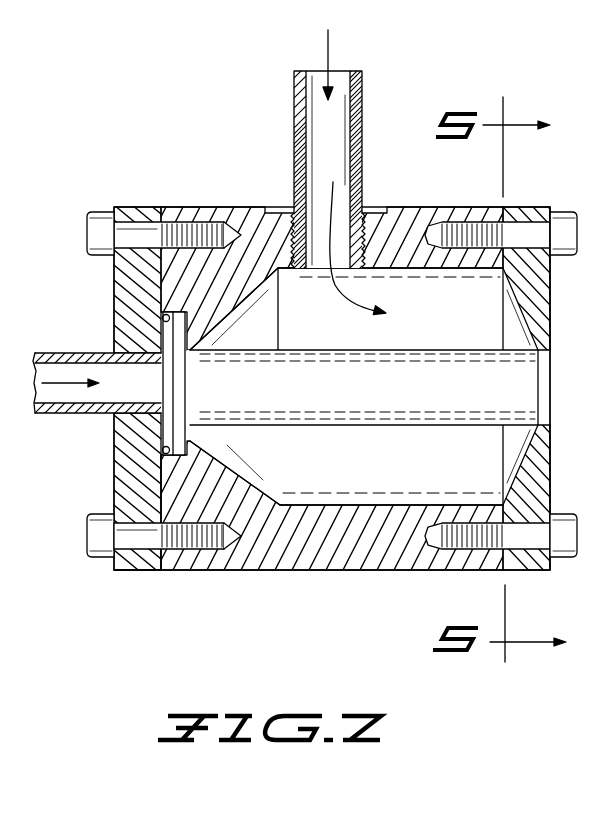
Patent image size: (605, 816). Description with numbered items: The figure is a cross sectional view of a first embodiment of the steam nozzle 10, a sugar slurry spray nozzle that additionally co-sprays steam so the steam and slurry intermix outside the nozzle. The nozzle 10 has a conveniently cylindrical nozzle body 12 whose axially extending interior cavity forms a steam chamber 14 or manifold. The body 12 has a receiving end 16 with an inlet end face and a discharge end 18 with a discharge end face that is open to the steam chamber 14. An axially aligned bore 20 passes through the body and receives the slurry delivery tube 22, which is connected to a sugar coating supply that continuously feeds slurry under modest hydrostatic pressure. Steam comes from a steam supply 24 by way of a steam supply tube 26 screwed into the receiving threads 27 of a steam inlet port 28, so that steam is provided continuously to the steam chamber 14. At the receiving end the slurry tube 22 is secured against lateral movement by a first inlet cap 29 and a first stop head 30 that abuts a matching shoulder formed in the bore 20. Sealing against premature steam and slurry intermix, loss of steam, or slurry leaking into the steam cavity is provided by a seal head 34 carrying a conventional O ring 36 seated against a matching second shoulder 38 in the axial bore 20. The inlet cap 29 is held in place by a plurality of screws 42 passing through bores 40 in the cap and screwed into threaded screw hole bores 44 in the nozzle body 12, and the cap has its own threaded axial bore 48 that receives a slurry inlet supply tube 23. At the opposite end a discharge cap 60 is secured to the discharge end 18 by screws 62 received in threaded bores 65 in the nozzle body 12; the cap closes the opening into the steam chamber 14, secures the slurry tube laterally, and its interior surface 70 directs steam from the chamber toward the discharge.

The steam nozzle 10 is at (218, 208).
The nozzle body 12 is at (380, 572).
The steam chamber 14 is at (320, 492).
The receiving end 16 is at (165, 458).
The discharge end 18 is at (513, 498).
The axial bore 20 is at (200, 356).
The slurry delivery tube 22 is at (470, 350).
The slurry inlet supply tube 23 is at (50, 352).
The steam supply 24 is at (369, 83).
The steam supply tube 26 is at (365, 110).
The receiving threads 27 is at (340, 230).
The steam inlet port 28 is at (293, 182).
The first inlet cap 29 is at (133, 570).
The first stop head 30 is at (188, 443).
The seal head 34 is at (162, 425).
The O ring 36 is at (170, 456).
The second shoulder 38 is at (165, 478).
The bores 40 is at (168, 190).
The screws 42 is at (83, 240).
The threaded screw hole bores 44 is at (192, 233).
The axial bore of inlet cap 48 is at (115, 373).
The discharge cap 60 is at (528, 572).
The screws 62 is at (552, 280).
The threaded bores 65 is at (455, 228).
The interior surface of discharge cap 70 is at (510, 287).